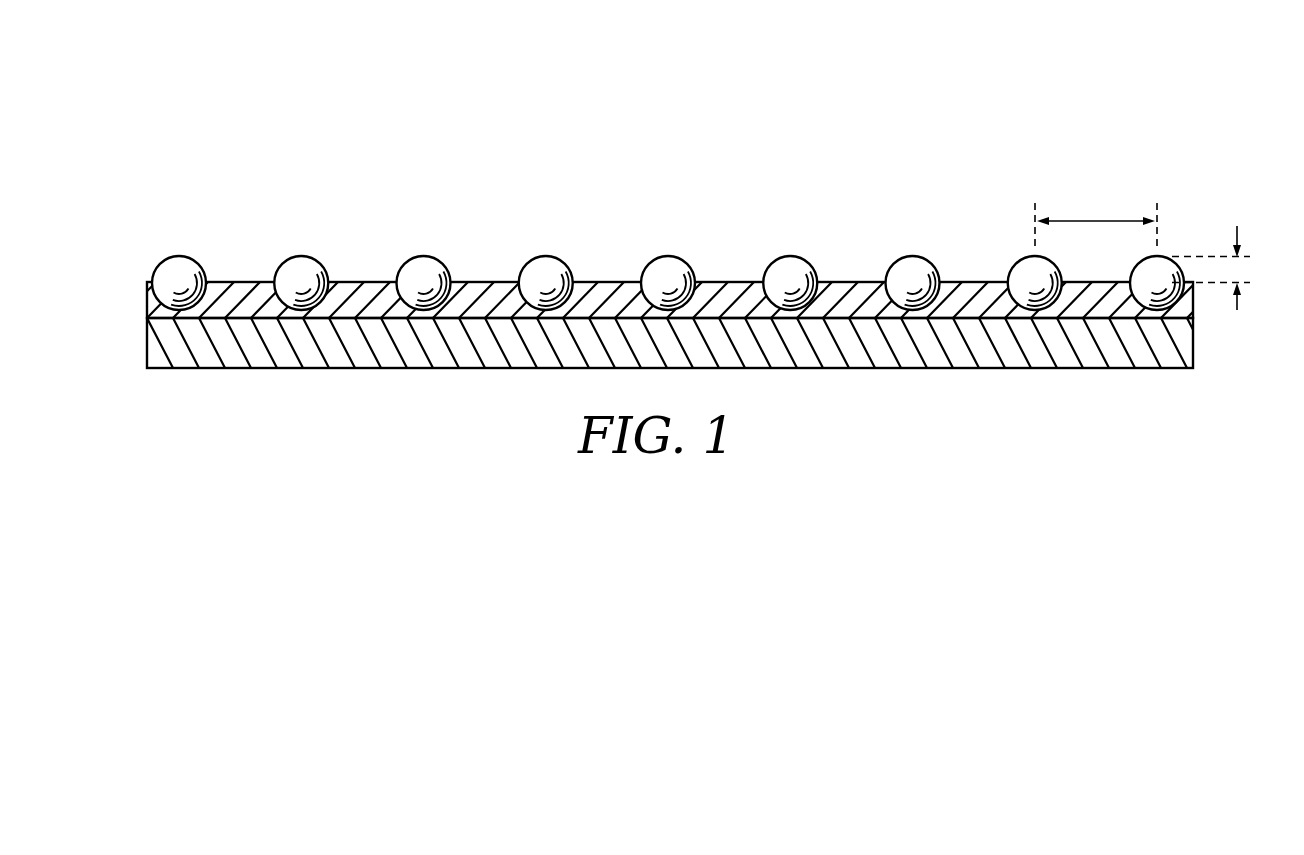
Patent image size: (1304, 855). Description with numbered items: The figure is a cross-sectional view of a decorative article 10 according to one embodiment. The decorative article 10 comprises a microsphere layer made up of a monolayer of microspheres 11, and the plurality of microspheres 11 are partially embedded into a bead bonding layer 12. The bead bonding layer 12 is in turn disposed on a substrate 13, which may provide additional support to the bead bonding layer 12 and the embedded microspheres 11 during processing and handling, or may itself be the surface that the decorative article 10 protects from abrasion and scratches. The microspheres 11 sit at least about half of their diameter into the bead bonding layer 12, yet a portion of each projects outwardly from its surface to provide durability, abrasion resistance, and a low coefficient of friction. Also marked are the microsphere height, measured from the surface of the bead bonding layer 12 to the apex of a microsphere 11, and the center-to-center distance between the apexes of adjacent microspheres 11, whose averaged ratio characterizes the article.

The decorative article 10 is at (1222, 110).
The microspheres 11 is at (410, 272).
The bead bonding layer 12 is at (143, 304).
The substrate 13 is at (1180, 344).